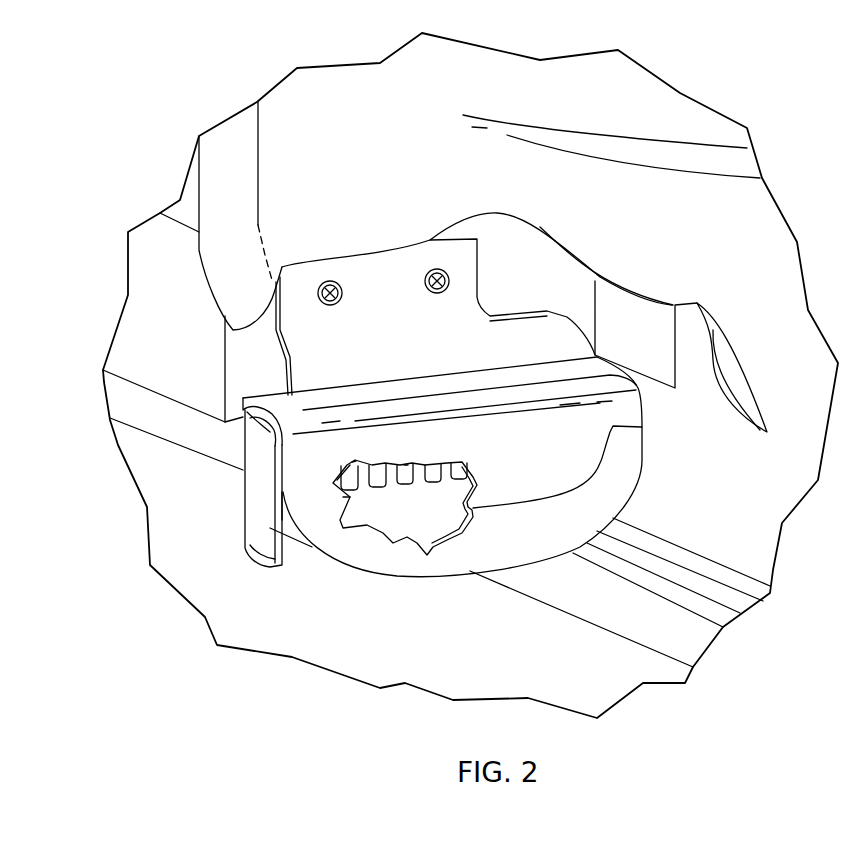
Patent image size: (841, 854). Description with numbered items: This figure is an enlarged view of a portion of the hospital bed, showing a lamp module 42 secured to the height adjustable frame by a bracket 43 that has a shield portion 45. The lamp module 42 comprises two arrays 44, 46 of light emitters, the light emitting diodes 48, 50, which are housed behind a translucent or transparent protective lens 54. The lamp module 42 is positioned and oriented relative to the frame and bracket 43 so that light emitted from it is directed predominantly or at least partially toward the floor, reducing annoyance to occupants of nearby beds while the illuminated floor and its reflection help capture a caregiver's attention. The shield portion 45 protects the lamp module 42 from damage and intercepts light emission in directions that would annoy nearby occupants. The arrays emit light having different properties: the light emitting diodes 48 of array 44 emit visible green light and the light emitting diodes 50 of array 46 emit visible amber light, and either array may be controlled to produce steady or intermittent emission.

The lamp module 42 is at (357, 593).
The bracket 43 is at (230, 432).
The array of light emitters 44 is at (428, 482).
The shield portion 45 is at (277, 405).
The array of light emitters 46 is at (405, 476).
The light emitting diode 48 is at (352, 500).
The light emitting diode 50 is at (380, 478).
The protective lens 54 is at (570, 467).